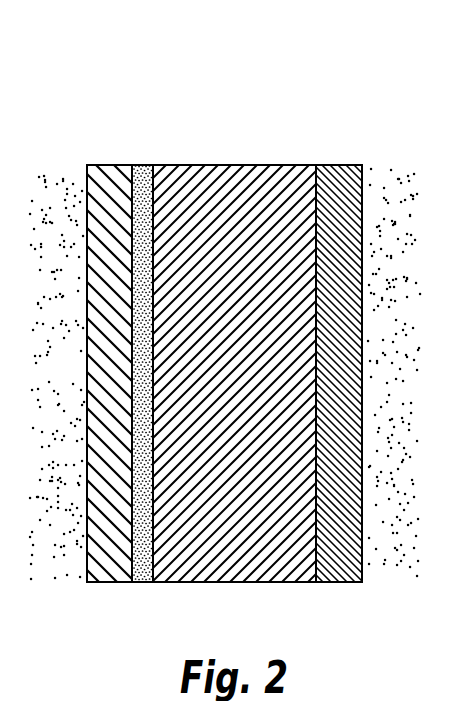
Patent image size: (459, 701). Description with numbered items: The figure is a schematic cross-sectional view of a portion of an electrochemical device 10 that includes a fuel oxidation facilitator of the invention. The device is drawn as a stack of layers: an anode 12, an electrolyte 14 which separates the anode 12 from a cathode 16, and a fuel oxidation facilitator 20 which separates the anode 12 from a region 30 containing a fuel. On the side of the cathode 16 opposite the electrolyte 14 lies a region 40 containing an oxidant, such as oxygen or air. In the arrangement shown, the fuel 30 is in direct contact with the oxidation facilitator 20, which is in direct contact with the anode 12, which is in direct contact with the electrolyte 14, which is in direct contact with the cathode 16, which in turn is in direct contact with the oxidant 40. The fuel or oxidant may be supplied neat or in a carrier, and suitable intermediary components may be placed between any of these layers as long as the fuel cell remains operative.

The electrochemical device 10 is at (237, 107).
The anode 12 is at (313, 150).
The electrolyte 14 is at (144, 165).
The cathode 16 is at (88, 150).
The fuel oxidation facilitator 20 is at (316, 150).
The region containing a fuel 30 is at (366, 150).
The region containing an oxidant 40 is at (85, 150).